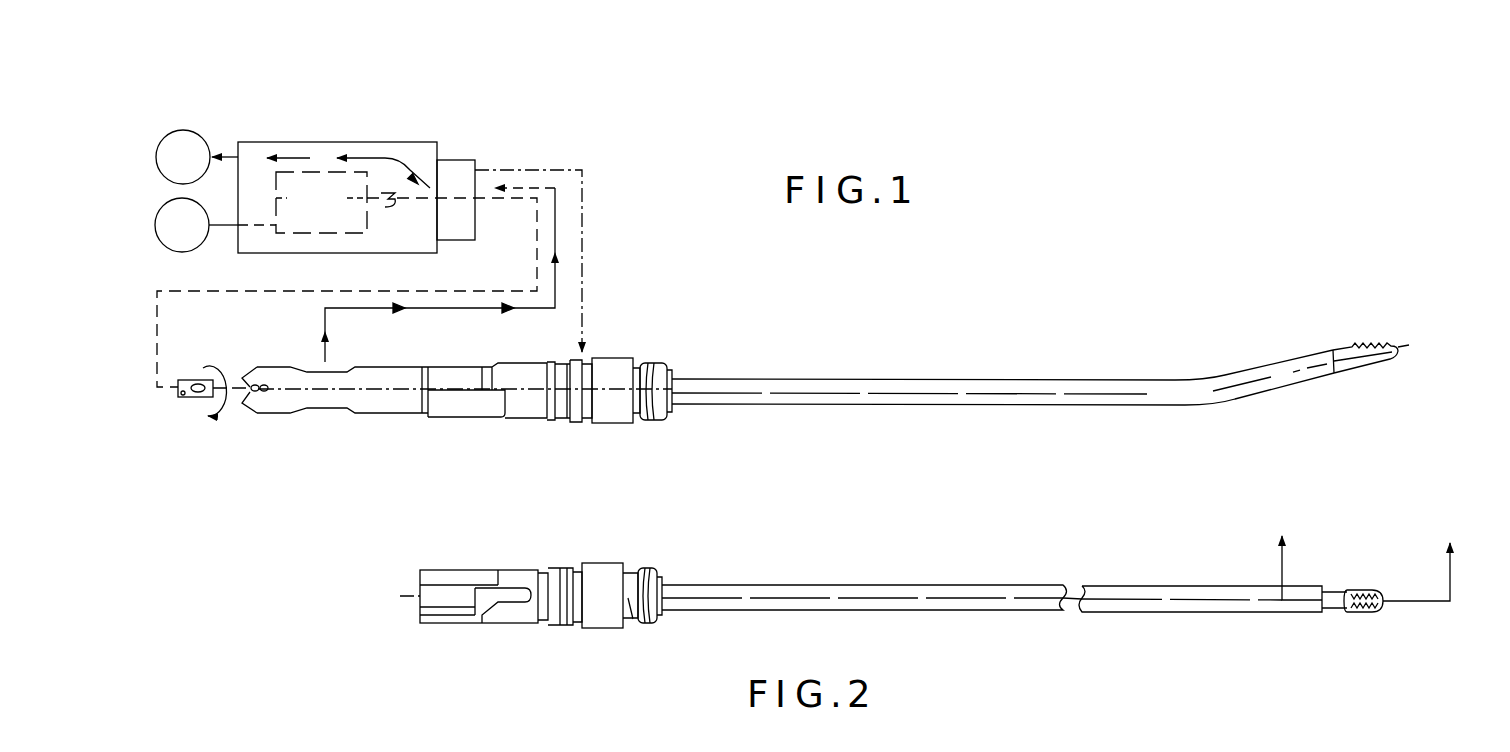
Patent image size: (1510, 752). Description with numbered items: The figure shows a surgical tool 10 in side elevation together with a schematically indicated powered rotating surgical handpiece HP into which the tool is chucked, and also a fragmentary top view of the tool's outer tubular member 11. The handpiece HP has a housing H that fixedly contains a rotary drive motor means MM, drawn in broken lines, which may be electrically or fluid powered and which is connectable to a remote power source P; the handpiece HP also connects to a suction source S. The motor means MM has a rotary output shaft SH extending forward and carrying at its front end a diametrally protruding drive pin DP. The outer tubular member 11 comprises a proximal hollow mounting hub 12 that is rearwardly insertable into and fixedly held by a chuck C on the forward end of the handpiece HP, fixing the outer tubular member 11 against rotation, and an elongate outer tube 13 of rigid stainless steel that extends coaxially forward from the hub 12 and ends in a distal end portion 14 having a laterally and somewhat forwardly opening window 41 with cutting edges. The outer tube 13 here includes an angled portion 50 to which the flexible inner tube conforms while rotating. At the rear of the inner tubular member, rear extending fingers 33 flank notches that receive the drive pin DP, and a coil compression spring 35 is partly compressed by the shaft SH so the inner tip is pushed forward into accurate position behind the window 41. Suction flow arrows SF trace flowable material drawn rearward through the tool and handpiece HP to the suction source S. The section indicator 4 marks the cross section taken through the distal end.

In FIG. 1, the tool 10 is at (780, 341).
In FIG. 1, the outer tubular member 11 is at (858, 374).
In FIG. 2, the outer tubular member 11 is at (824, 572).
In FIG. 1, the proximal hollow mounting hub 12 is at (606, 426).
In FIG. 2, the proximal hollow mounting hub 12 is at (601, 631).
In FIG. 1, the outer tube 13 is at (933, 378).
In FIG. 2, the outer tube 13 is at (899, 584).
In FIG. 1, the distal end portion 14 is at (1353, 369).
In FIG. 1, the rear extending fingers 33 is at (257, 403).
In FIG. 1, the coil compression spring 35 is at (242, 378).
In FIG. 1, the window 41 is at (1371, 344).
In FIG. 1, the angled portion 50 is at (1185, 380).
In FIG. 2, the section line 4- 4 is at (1364, 567).
In FIG. 1, the suction source S is at (197, 157).
In FIG. 1, the remote power source P is at (215, 225).
In FIG. 1, the housing H is at (368, 141).
In FIG. 1, the powered rotating surgical handpiece HP is at (307, 126).
In FIG. 1, the chuck C is at (456, 160).
In FIG. 1, the rotary drive motor means MM is at (321, 202).
In FIG. 1, the rotary output shaft SH is at (383, 214).
In FIG. 1, the suction flow arrows SF is at (469, 310).
In FIG. 1, the drive pin DP is at (191, 399).